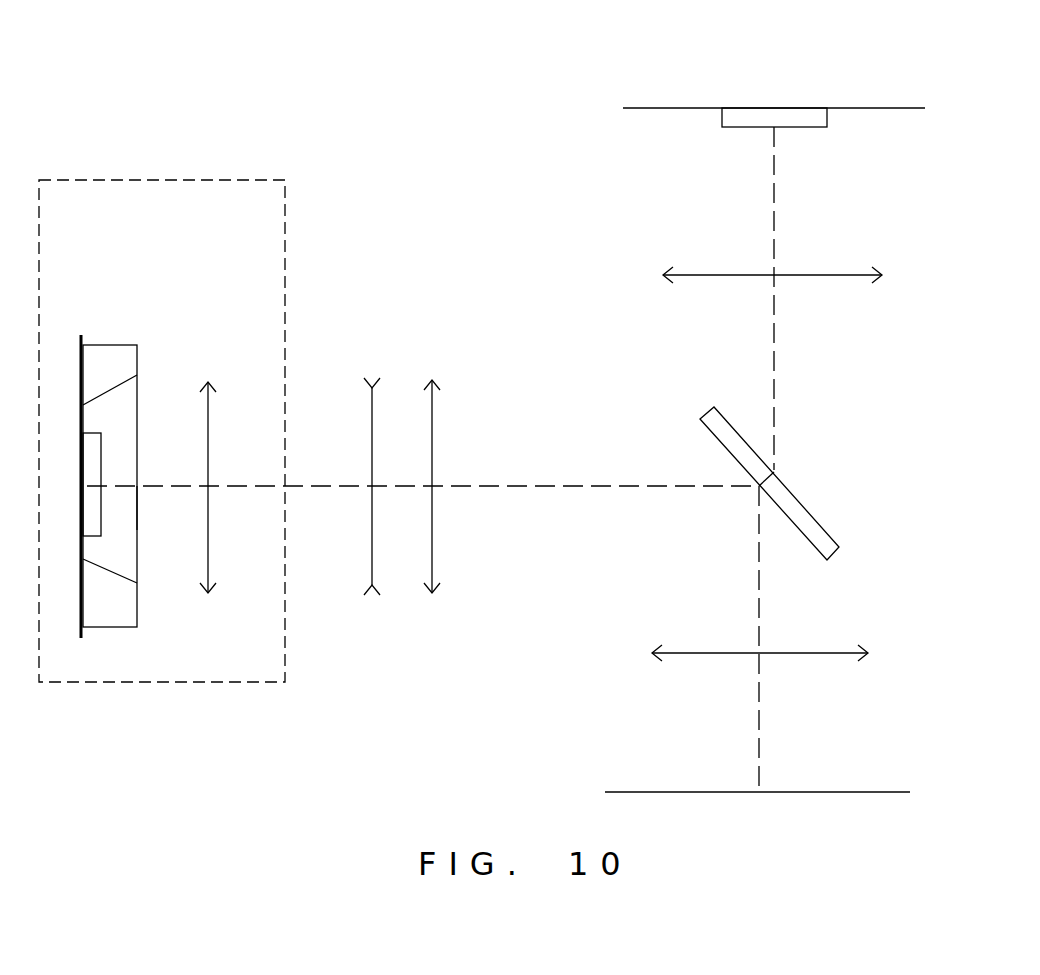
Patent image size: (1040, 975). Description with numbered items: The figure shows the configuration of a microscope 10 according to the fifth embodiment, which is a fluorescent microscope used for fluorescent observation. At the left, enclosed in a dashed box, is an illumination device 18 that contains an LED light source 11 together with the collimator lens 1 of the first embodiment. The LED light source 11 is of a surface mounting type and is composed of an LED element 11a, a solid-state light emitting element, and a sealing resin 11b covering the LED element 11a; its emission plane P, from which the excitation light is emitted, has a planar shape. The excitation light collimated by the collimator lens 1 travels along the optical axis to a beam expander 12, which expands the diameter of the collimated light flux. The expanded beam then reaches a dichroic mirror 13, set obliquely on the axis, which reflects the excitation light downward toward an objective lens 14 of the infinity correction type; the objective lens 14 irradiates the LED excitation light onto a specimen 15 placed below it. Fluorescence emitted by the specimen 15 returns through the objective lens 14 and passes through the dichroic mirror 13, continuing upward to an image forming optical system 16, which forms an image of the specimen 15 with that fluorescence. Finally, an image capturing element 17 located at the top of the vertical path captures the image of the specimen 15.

The microscope 10 is at (1022, 73).
The illumination device 18 is at (160, 180).
The LED light source 11 is at (138, 438).
The LED element 11a is at (92, 452).
The sealing resin 11b is at (120, 443).
The emission plane P is at (138, 507).
The collimator lens 1 is at (207, 423).
The beam expander 12 is at (480, 339).
The dichroic mirror 13 is at (812, 513).
The objective lens 14 is at (830, 653).
The specimen 15 is at (863, 792).
The image forming optical system 16 is at (840, 275).
The image capturing element 17 is at (805, 127).